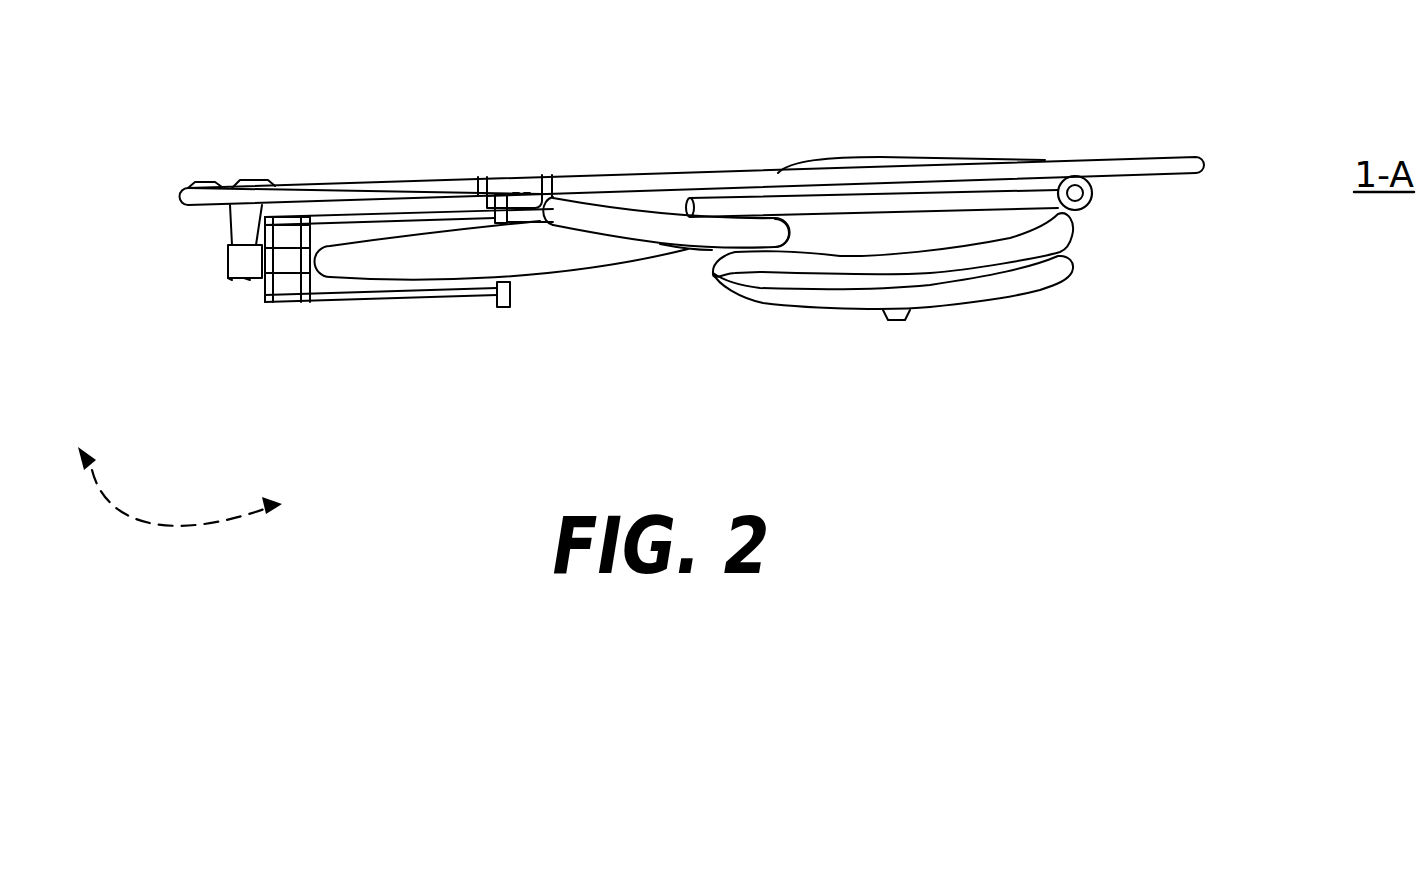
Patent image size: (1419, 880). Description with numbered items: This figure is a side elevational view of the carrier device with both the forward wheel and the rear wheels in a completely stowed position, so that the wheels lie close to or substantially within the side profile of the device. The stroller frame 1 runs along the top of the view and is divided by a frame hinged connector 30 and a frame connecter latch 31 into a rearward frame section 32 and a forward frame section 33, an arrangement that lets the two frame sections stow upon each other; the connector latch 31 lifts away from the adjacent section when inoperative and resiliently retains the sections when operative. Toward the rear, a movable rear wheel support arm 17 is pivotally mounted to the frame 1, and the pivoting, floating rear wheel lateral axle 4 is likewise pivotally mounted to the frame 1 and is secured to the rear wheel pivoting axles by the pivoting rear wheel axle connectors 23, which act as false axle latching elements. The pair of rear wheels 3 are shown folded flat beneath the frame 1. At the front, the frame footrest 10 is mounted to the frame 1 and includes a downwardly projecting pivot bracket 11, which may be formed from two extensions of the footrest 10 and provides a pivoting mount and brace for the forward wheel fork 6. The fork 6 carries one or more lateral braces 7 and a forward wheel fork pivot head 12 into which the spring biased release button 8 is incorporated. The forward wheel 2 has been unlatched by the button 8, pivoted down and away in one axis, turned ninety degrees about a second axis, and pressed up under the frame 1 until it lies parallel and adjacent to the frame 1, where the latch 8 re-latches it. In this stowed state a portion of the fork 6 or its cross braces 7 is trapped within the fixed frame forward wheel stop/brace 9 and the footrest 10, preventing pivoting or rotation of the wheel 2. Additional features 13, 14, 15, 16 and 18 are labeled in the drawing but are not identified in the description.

The frame 1 is at (1170, 150).
The forward wheel 2 is at (575, 285).
The rear wheels 3 is at (1077, 233).
The pivoting rear wheel lateral axle 4 is at (1006, 198).
The forward wheel fork 6 is at (352, 301).
The lateral braces 7 is at (268, 301).
The forward wheel fork spring biased release button 8 is at (227, 260).
The fixed frame forward wheel stop/brace 9 is at (193, 182).
The frame footrest 10 is at (253, 180).
The downwardly projecting pivot bracket 11 is at (228, 228).
The forward wheel fork pivot head 12 is at (248, 280).
The pin 13 is at (227, 280).
The arm end 14 is at (783, 240).
The stop block 15 is at (510, 307).
The arm 16 is at (706, 195).
The movable rear wheel support arm 17 is at (697, 252).
The slot 18 is at (548, 175).
The pivoting rear wheel axle connectors 23 is at (1096, 188).
The frame hinged connector 30 is at (480, 176).
The frame connecter latch 31 is at (512, 177).
The rearward frame section 32 is at (783, 168).
The forward frame section 33 is at (350, 186).